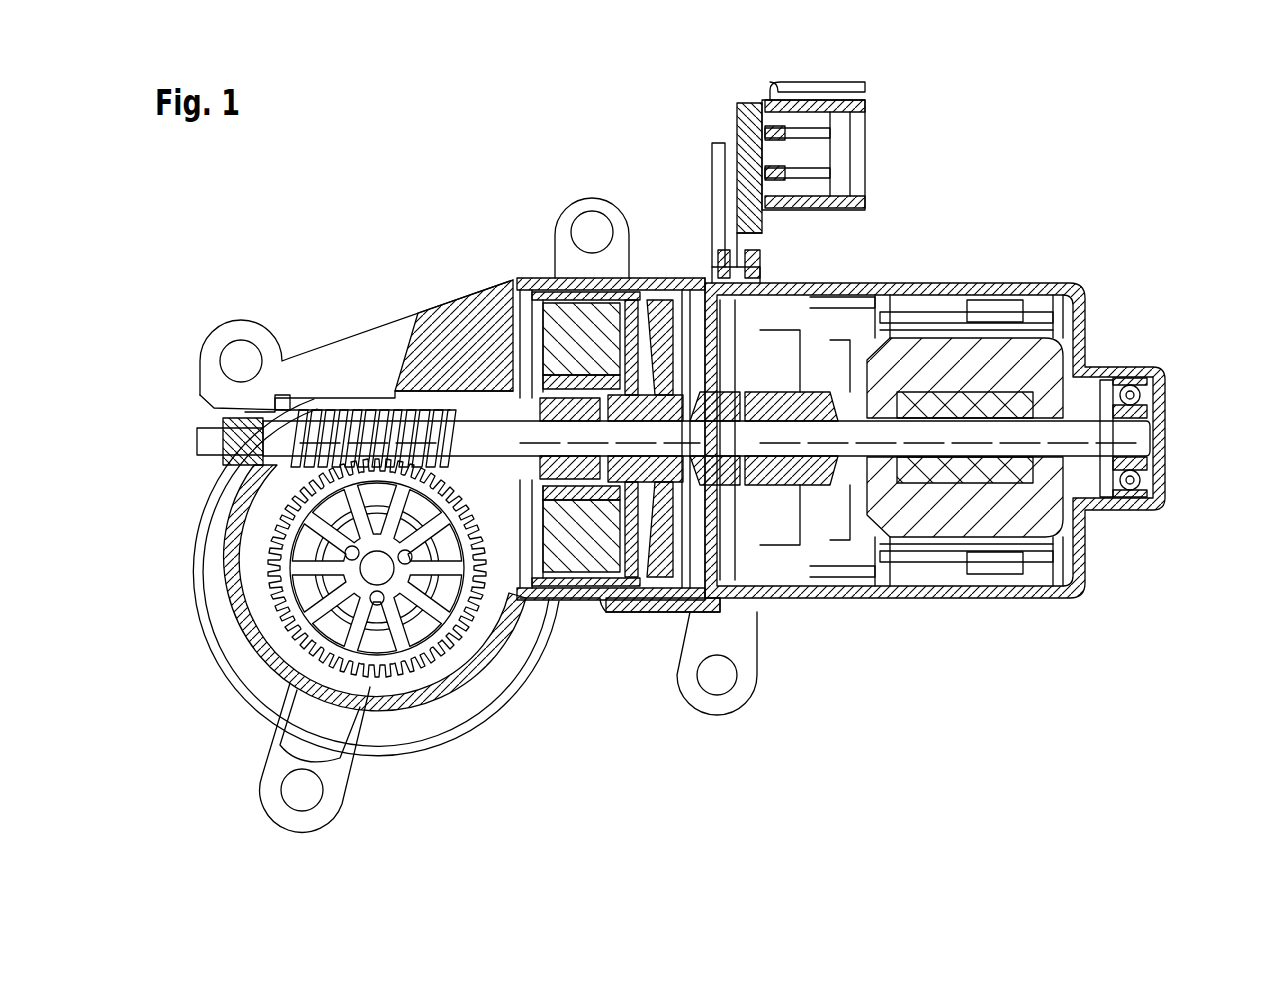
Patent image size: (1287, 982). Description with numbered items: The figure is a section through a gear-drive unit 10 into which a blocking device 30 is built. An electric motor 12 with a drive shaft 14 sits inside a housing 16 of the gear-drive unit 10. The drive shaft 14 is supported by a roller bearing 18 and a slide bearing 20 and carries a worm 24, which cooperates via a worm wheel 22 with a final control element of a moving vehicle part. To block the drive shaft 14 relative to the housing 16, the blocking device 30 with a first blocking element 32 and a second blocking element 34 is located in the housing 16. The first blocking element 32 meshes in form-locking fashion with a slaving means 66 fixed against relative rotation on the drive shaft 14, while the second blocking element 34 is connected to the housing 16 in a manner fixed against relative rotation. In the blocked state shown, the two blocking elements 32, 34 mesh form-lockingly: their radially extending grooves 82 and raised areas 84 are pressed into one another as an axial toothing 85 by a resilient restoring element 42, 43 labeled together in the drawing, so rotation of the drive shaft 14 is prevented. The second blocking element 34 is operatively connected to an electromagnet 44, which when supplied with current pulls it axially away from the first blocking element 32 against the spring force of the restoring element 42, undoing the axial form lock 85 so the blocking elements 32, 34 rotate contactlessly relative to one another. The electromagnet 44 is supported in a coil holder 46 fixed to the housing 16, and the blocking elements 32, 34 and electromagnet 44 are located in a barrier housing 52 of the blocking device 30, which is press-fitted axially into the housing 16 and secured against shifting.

The gear-drive unit 10 is at (1095, 163).
The electric motor 12 is at (975, 602).
The drive shaft 14 is at (1140, 433).
The housing 16 is at (905, 285).
The roller bearing 18 is at (1127, 372).
The slide bearing 20 is at (516, 393).
The worm wheel 22 is at (412, 660).
The worm 24 is at (385, 410).
The blocking device 30 is at (634, 279).
The first blocking element 32 is at (656, 585).
The second blocking element 34 is at (628, 575).
The resilient restoring element 42 is at (578, 287).
The bearing ring 43 is at (581, 437).
The electromagnet 44 is at (588, 575).
The coil holder 46 is at (550, 605).
The barrier housing 52 is at (537, 277).
The slaving means 66 is at (655, 620).
The radially extending grooves 82 is at (736, 213).
The raised areas 84 is at (749, 185).
The axial toothing 85 is at (677, 280).